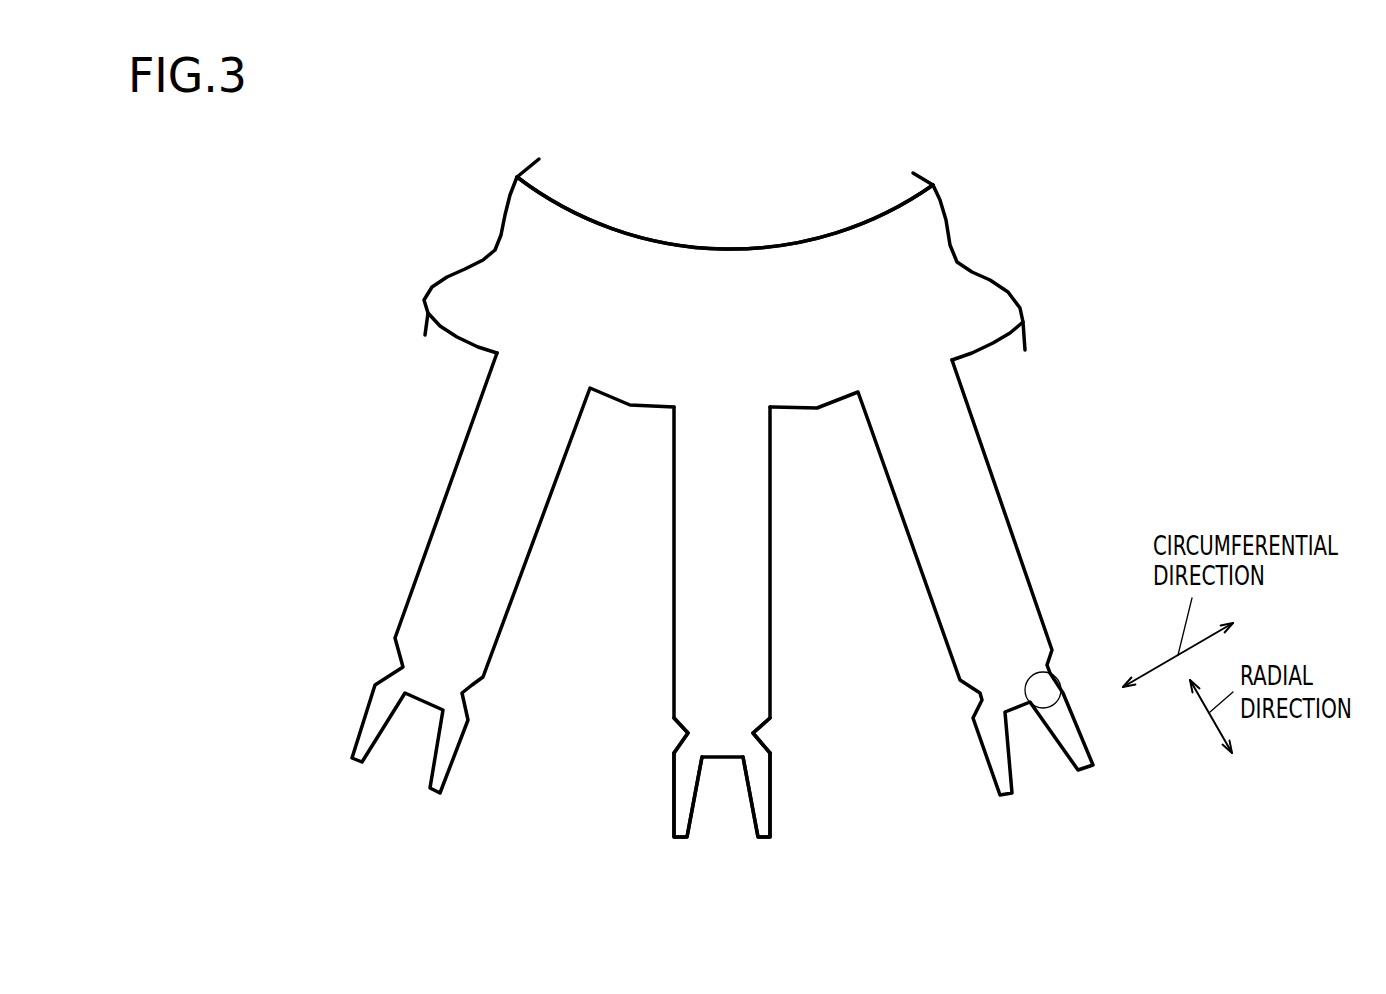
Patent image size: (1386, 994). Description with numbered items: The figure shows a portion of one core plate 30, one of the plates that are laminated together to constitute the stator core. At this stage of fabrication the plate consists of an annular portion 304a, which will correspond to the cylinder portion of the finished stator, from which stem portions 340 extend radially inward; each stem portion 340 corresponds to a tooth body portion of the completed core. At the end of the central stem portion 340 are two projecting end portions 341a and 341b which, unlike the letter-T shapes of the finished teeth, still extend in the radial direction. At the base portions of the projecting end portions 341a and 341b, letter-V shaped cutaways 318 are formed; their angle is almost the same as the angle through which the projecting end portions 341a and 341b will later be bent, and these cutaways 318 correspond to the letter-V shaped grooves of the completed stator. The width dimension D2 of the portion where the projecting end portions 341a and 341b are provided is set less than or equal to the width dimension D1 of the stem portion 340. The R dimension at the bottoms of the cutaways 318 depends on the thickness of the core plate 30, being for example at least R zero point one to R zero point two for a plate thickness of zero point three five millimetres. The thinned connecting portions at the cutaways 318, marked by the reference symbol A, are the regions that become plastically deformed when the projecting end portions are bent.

The core plate 30 is at (978, 215).
The annular portion 304a is at (797, 307).
The stem portion 340 is at (465, 522).
The cutaway 318 is at (756, 735).
The projecting end portion 341a is at (678, 795).
The projecting end portion 341b is at (760, 792).
The R dimension R is at (690, 735).
The width dimension of the stem portion D1 is at (769, 592).
The width dimension of the portion at which the projecting end portions are provided D2 is at (770, 840).
The thin connecting portion A is at (1055, 677).